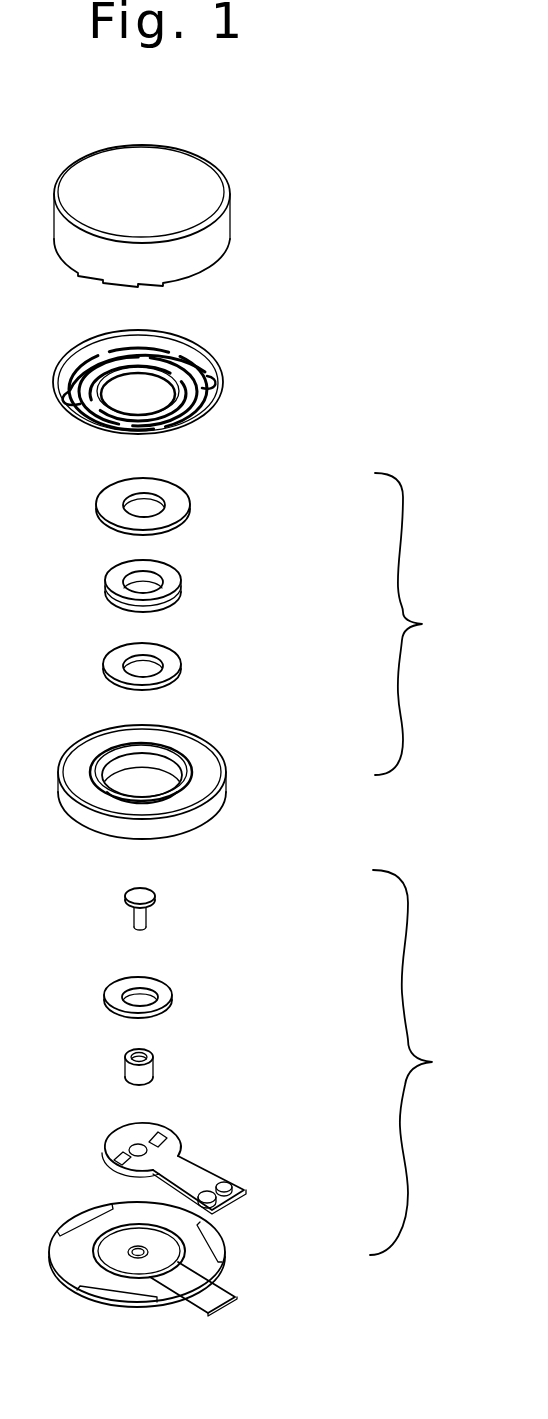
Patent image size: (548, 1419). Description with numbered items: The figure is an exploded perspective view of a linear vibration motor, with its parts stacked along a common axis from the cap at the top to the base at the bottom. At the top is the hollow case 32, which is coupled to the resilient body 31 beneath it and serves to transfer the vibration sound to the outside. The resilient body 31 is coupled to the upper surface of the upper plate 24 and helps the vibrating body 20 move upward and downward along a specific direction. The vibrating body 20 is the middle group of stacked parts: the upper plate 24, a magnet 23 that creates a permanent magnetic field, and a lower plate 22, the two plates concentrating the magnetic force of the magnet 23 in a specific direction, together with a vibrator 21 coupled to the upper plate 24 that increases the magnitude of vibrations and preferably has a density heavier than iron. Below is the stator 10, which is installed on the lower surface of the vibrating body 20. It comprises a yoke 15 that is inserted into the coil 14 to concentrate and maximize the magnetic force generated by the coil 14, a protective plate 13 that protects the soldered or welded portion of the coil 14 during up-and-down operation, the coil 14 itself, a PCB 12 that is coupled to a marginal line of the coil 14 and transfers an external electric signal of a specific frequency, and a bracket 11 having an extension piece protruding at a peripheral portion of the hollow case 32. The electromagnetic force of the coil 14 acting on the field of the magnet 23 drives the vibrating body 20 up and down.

The stator 10 is at (425, 1062).
The bracket 11 is at (202, 1255).
The PCB 12 is at (195, 1176).
The protective plate 13 is at (163, 1004).
The coil 14 is at (150, 1073).
The yoke 15 is at (155, 893).
The vibrating body 20 is at (420, 624).
The vibrator 21 is at (210, 775).
The lower plate 22 is at (175, 668).
The magnet 23 is at (172, 585).
The upper plate 24 is at (180, 506).
The resilient body 31 is at (213, 380).
The hollow case 32 is at (215, 229).